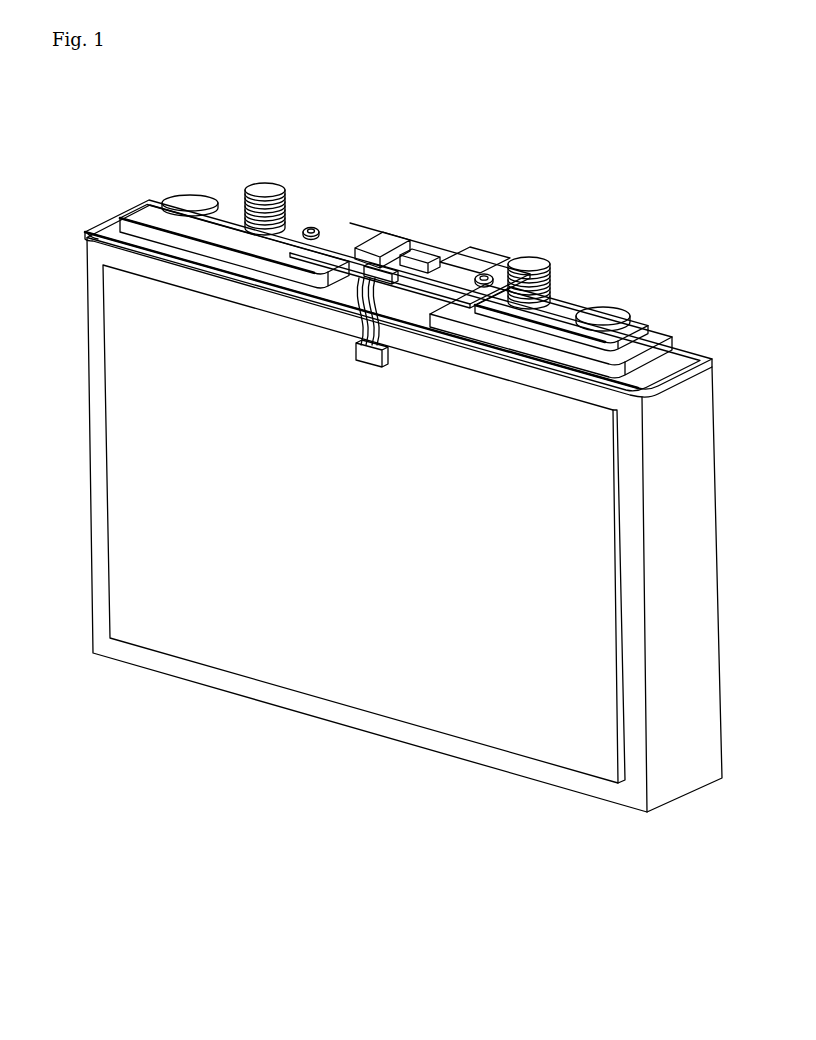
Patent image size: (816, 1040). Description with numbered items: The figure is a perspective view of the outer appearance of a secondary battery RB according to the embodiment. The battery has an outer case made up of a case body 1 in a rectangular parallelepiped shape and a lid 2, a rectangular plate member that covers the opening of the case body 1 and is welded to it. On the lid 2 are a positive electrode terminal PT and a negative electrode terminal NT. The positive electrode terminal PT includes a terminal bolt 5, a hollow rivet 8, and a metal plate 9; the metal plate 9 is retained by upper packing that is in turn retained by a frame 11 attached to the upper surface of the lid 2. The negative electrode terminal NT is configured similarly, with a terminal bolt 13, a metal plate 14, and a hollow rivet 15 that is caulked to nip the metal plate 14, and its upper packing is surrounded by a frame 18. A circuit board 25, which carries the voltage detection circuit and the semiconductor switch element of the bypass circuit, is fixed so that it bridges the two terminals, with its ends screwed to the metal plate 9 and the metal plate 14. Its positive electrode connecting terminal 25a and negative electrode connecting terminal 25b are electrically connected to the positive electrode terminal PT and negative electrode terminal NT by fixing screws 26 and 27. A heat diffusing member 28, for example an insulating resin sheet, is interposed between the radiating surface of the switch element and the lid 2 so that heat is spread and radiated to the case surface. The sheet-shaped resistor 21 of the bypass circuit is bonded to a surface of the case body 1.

The case body 1 is at (667, 814).
The lid 2 is at (697, 353).
The frame 11 is at (117, 232).
The resistor 21 is at (313, 697).
The terminal bolt 5 is at (266, 181).
The hollow rivet 8 is at (186, 197).
The metal plate 9 is at (230, 210).
The terminal bolt 13 is at (529, 258).
The metal plate 14 is at (562, 300).
The hollow rivet 15 is at (608, 310).
The frame 18 is at (542, 350).
The circuit board 25 is at (425, 238).
The positive electrode connecting terminal 25a is at (352, 232).
The negative electrode connecting terminal 25b is at (477, 251).
The fixing screw 26 is at (309, 226).
The fixing screw 27 is at (490, 272).
The heat diffusing member 28 is at (397, 308).
The positive electrode terminal PT is at (204, 158).
The negative electrode terminal NT is at (598, 263).
The secondary battery RB is at (418, 148).